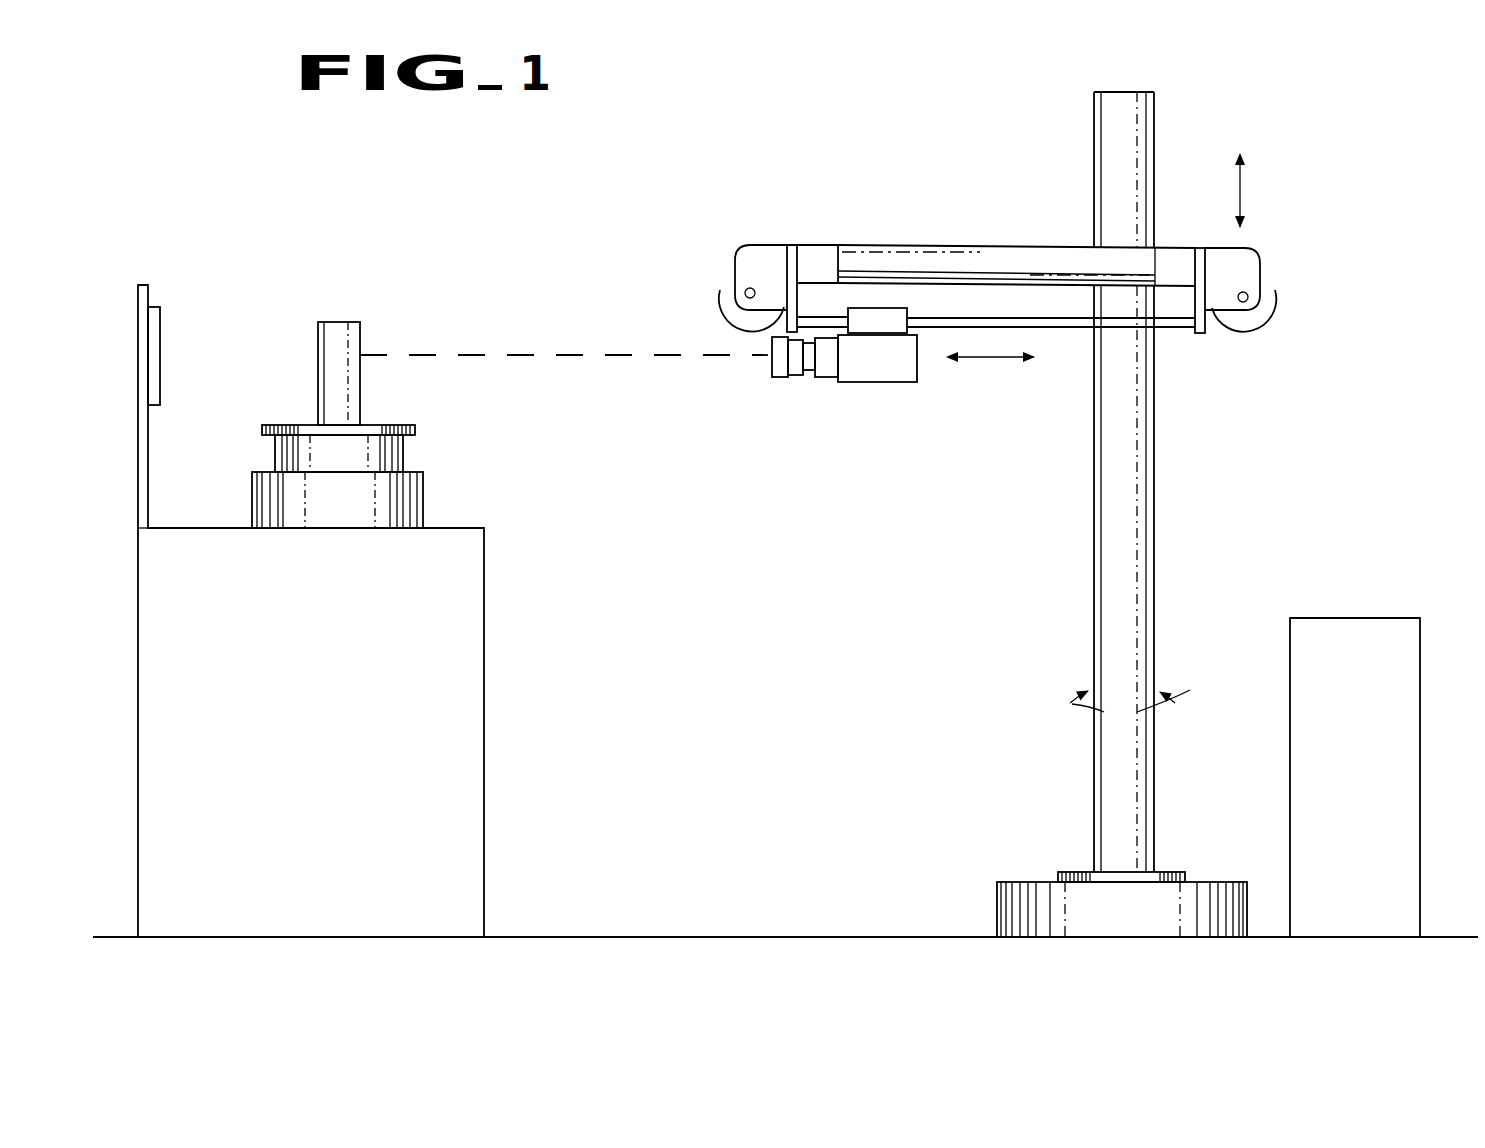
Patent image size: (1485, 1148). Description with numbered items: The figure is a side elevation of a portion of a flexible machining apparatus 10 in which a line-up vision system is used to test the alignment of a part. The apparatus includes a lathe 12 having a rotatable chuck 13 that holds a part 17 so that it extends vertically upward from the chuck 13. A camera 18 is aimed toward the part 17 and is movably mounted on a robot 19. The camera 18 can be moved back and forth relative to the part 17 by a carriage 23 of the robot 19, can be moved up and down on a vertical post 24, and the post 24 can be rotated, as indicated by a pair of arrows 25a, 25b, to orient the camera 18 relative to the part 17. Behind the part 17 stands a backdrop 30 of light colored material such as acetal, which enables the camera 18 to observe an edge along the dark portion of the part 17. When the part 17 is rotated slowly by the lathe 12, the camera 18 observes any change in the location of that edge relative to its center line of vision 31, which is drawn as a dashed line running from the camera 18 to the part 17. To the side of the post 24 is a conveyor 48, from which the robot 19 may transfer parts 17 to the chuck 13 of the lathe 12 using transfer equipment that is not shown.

The flexible machining apparatus 10 is at (1229, 131).
The lathe 12 is at (346, 583).
The rotatable chuck 13 is at (405, 452).
The part 17 is at (318, 360).
The camera 18 is at (912, 378).
The robot 19 is at (970, 241).
The carriage 23 is at (905, 310).
The vertical post 24 is at (1094, 118).
The arrow 25a is at (1190, 690).
The arrow 25b is at (1070, 703).
The backdrop 30 is at (160, 316).
The center line of vision 31 is at (513, 353).
The conveyor 48 is at (1372, 711).